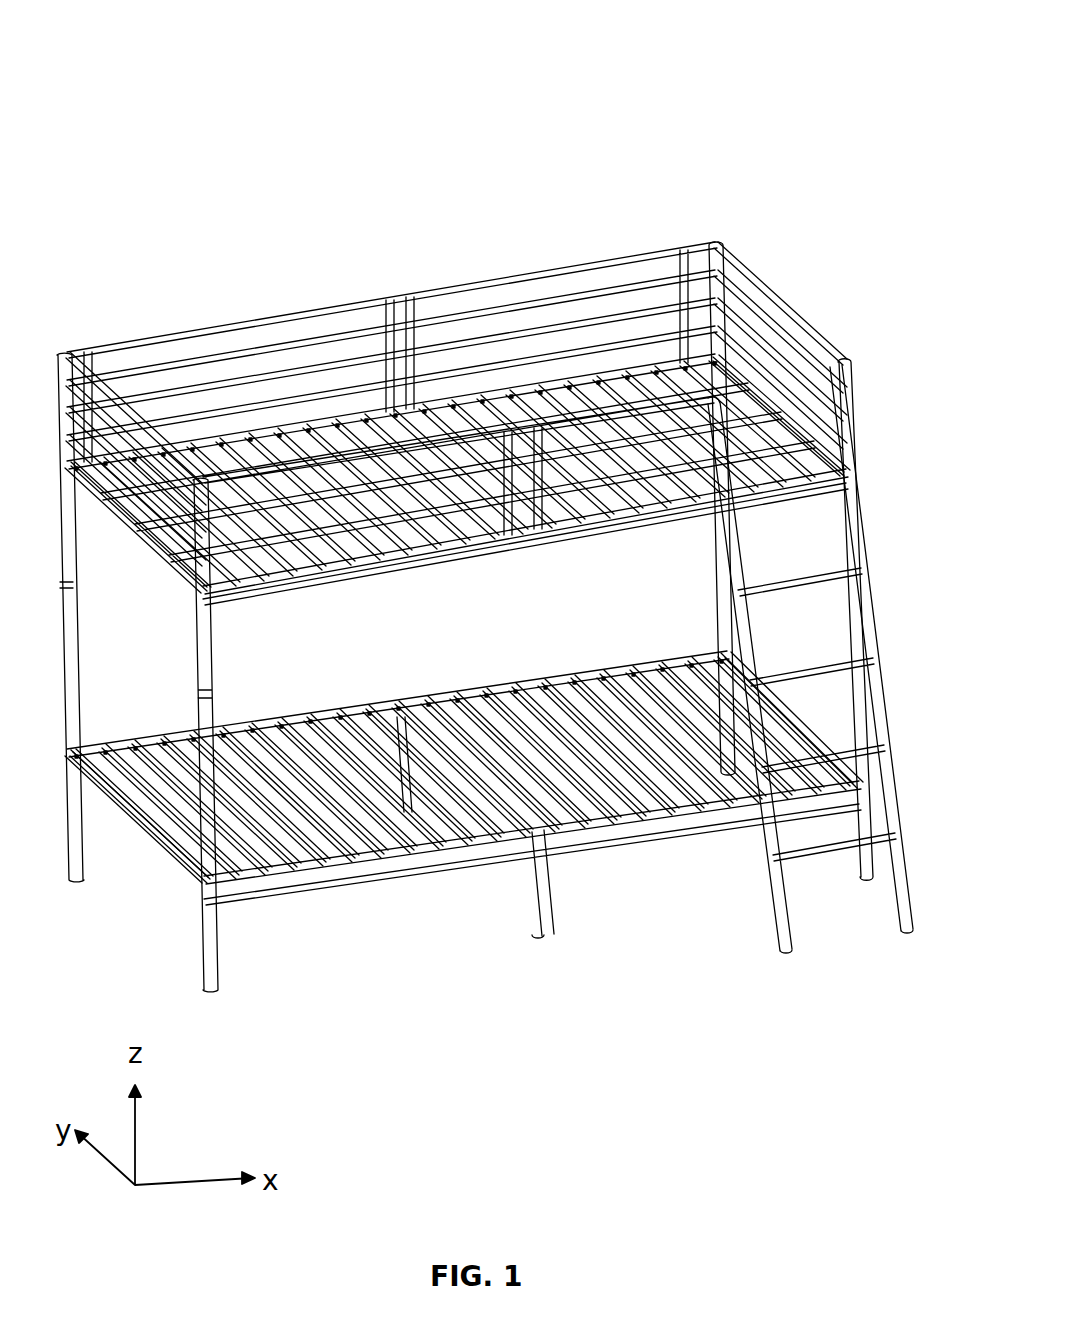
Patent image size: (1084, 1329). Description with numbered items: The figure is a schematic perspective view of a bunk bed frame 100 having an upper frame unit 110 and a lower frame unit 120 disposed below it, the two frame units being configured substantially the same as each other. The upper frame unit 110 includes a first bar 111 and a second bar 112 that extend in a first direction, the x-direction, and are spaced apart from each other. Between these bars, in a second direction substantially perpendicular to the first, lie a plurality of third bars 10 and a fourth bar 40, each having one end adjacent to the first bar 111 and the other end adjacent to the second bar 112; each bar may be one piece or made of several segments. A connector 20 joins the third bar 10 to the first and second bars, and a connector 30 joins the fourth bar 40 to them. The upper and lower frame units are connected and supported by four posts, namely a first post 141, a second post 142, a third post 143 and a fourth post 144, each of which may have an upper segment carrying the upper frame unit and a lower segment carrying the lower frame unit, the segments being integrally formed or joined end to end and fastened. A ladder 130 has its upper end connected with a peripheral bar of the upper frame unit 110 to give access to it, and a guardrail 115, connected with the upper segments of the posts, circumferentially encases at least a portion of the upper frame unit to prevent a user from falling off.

The bunk bed 100 is at (213, 48).
The third bar 10 is at (247, 443).
The connector 20 is at (204, 440).
The connector 30 is at (388, 410).
The fourth bar 40 is at (407, 423).
The frame unit 110 is at (457, 367).
The first bar 111 is at (187, 443).
The second bar 112 is at (372, 575).
The guardrail 115 is at (456, 329).
The lower frame unit 120 is at (497, 762).
The ladder 130 is at (762, 837).
The first post 141 is at (78, 634).
The second post 142 is at (720, 600).
The third post 143 is at (210, 665).
The fourth post 144 is at (858, 522).